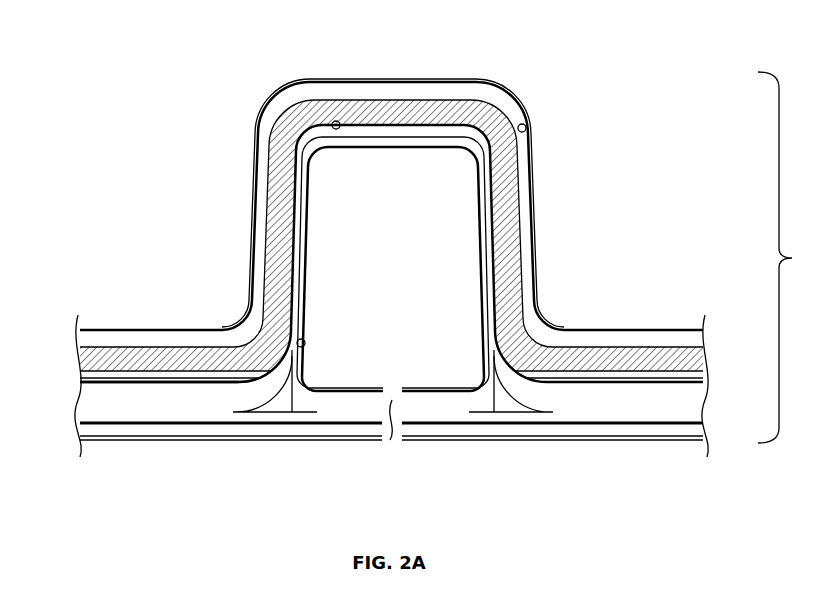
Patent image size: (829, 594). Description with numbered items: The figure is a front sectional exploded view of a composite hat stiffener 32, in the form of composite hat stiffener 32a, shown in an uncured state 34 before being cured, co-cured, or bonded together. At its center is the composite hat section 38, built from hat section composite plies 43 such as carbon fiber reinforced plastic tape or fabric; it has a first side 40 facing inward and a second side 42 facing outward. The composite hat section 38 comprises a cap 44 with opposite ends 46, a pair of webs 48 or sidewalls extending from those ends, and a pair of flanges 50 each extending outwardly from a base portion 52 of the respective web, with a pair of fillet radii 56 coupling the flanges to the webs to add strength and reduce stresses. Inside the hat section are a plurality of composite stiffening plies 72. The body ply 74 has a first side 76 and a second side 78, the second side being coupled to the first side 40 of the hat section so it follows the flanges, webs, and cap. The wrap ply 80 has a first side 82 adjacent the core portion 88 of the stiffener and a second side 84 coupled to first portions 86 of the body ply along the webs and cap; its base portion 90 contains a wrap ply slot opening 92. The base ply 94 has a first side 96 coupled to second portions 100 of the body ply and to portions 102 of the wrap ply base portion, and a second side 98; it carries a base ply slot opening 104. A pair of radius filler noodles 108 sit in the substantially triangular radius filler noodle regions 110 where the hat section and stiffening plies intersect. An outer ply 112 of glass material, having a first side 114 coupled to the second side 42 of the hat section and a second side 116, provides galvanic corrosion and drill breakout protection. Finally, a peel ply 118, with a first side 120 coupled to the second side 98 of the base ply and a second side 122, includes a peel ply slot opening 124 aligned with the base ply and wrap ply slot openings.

The composite hat stiffener 32 is at (790, 257).
The composite hat stiffener 32a is at (616, 74).
The uncured state 34 is at (589, 190).
The composite hat section 38 is at (433, 90).
The first side 40 is at (338, 121).
The second side 42 is at (376, 100).
The hat section composite plies 43 is at (514, 236).
The cap 44 is at (388, 126).
The opposite ends 46 is at (290, 126).
The webs 48 is at (270, 206).
The flanges 50 is at (113, 356).
The base portion 52 is at (268, 318).
The fillet radii 56 is at (247, 344).
The composite stiffening plies 72 is at (492, 340).
The body ply 74 is at (109, 389).
The first side 76 is at (137, 386).
The second side 78 is at (173, 382).
The wrap ply 80 is at (309, 290).
The first side 82 is at (308, 315).
The second side 84 is at (307, 343).
The first portions 86 is at (304, 237).
The core portion 88 is at (388, 254).
The base portion 90 is at (323, 388).
The wrap ply slot opening 92 is at (388, 392).
The base ply 94 is at (679, 419).
The first side 96 is at (628, 424).
The second side 98 is at (650, 438).
The second portions 100 is at (276, 391).
The portions 102 is at (323, 394).
The base ply slot opening 104 is at (392, 424).
The radius filler noodles 108 is at (287, 408).
The radius filler noodle regions 110 is at (253, 387).
The outer ply 112 is at (524, 106).
The first side 114 is at (530, 124).
The second side 116 is at (531, 146).
The peel ply 118 is at (177, 444).
The first side 120 is at (221, 434).
The second side 122 is at (202, 439).
The peel ply slot opening 124 is at (390, 441).